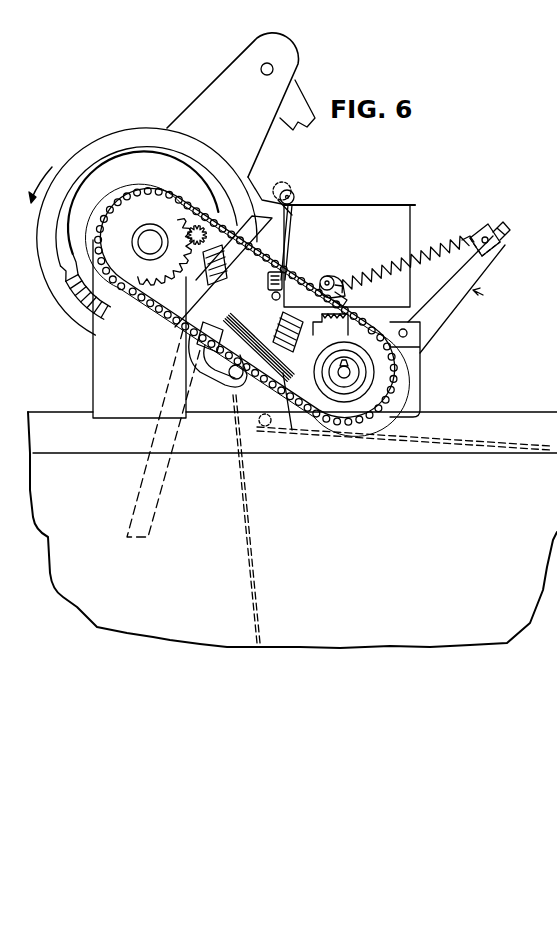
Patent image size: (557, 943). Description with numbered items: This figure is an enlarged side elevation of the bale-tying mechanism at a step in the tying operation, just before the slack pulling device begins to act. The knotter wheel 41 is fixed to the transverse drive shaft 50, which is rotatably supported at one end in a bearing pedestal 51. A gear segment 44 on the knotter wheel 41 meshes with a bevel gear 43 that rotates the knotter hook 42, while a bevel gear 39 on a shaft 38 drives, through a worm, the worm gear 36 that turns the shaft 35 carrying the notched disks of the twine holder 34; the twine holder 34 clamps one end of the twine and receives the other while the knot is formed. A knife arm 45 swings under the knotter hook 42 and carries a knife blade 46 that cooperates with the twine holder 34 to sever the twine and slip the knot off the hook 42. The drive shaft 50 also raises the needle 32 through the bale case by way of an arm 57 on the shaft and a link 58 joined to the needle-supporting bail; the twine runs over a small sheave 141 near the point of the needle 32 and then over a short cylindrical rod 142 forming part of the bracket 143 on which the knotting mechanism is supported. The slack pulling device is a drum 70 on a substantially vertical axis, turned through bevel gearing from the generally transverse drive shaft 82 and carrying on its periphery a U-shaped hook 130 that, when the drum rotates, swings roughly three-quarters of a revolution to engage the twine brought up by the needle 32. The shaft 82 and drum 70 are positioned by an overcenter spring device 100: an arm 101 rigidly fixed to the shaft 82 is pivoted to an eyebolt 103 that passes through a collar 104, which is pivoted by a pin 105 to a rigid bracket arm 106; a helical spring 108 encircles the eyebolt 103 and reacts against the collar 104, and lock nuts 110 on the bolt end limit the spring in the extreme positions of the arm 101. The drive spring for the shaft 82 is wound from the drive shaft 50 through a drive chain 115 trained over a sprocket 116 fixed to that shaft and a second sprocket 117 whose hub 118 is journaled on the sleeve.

The needle 32 is at (268, 197).
The twine holder 34 is at (269, 508).
The shaft 35 is at (271, 347).
The worm gear 36 is at (313, 332).
The shaft 38 is at (177, 278).
The bevel gear 39 is at (190, 236).
The knotter wheel 41 is at (87, 148).
The knotter hook 42 is at (228, 380).
The bevel gear 43 is at (185, 340).
The gear segment 44 is at (60, 310).
The knife arm 45 is at (183, 380).
The knife blade 46 is at (265, 424).
The transverse drive shaft 50 is at (138, 248).
The bearing pedestal 51 is at (102, 367).
The arm 57 is at (212, 92).
The link 58 is at (295, 97).
The drum 70 is at (393, 218).
The drive shaft 82 is at (343, 378).
The overcenter spring device 100 is at (493, 297).
The arm 101 is at (345, 300).
The eyebolt 103 is at (388, 272).
The collar 104 is at (468, 235).
The pin 105 is at (500, 250).
The bracket arm 106 is at (447, 310).
The helical spring 108 is at (430, 258).
The lock nuts 110 is at (500, 230).
The drive chain 115 is at (167, 313).
The sprocket 116 is at (130, 268).
The second sprocket 117 is at (407, 387).
The hub 118 is at (393, 360).
The hook 130 is at (283, 235).
The sheave 141 is at (290, 203).
The cylindrical rod 142 is at (287, 282).
The bracket 143 is at (328, 278).